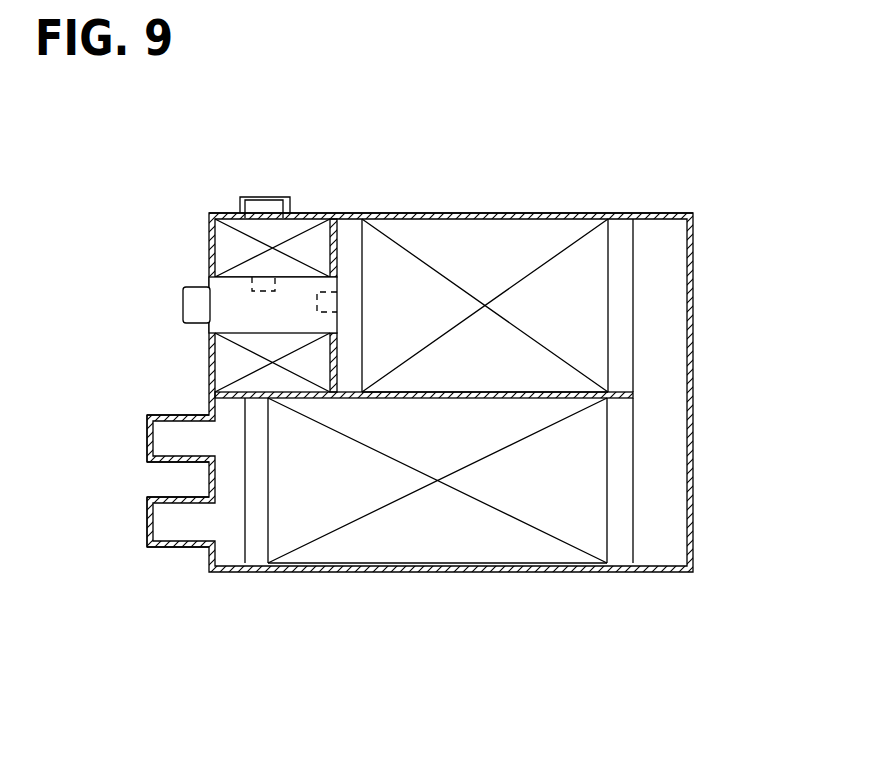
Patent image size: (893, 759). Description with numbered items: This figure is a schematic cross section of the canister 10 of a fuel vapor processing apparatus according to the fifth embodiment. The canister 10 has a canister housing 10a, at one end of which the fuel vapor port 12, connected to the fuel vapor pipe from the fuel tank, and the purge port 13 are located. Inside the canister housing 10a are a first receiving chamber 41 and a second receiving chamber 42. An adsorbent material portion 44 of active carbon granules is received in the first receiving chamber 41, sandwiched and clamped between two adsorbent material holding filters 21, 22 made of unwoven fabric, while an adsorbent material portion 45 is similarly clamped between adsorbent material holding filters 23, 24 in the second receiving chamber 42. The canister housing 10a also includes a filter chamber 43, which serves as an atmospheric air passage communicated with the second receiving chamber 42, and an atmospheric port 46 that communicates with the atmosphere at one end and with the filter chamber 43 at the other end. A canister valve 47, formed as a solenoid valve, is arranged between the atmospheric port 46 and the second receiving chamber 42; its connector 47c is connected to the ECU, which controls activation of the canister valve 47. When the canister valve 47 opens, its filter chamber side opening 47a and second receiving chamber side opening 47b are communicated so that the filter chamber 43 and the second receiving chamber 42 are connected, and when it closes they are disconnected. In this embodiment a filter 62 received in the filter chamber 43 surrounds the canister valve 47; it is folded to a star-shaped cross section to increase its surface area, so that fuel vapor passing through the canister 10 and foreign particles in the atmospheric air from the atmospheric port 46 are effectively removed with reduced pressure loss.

The canister 10 is at (518, 178).
The canister housing 10a is at (655, 213).
The fuel vapor port 12 is at (158, 532).
The purge port 13 is at (160, 432).
The adsorbent material holding filter 21 is at (252, 538).
The adsorbent material holding filter 22 is at (618, 522).
The adsorbent material holding filter 23 is at (622, 336).
The adsorbent material holding filter 24 is at (353, 343).
The first receiving chamber 41 is at (388, 552).
The second receiving chamber 42 is at (523, 392).
The filter chamber 43 is at (320, 217).
The adsorbent material portion 44 is at (588, 463).
The adsorbent material portion 45 is at (578, 297).
The atmospheric port 46 is at (267, 200).
The canister valve 47 is at (233, 263).
The filter chamber side opening 47a is at (262, 276).
The second receiving chamber side opening 47b is at (337, 302).
The connector 47c is at (183, 300).
The filter 62 is at (227, 233).